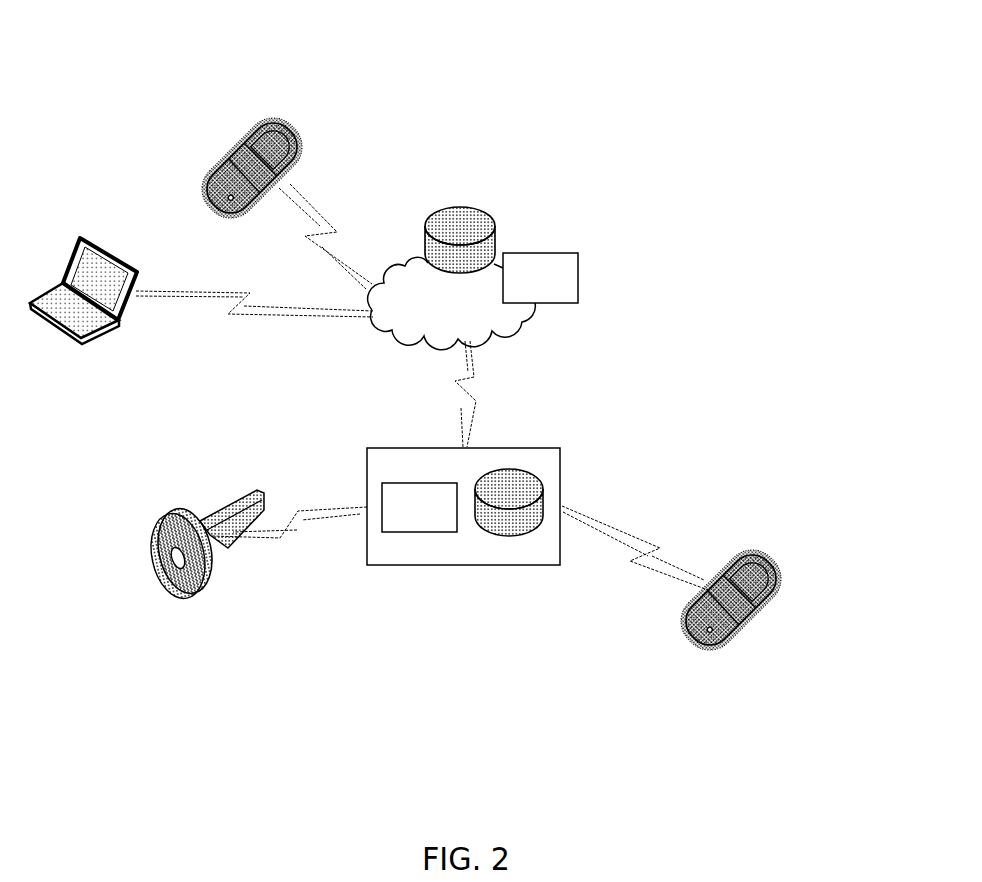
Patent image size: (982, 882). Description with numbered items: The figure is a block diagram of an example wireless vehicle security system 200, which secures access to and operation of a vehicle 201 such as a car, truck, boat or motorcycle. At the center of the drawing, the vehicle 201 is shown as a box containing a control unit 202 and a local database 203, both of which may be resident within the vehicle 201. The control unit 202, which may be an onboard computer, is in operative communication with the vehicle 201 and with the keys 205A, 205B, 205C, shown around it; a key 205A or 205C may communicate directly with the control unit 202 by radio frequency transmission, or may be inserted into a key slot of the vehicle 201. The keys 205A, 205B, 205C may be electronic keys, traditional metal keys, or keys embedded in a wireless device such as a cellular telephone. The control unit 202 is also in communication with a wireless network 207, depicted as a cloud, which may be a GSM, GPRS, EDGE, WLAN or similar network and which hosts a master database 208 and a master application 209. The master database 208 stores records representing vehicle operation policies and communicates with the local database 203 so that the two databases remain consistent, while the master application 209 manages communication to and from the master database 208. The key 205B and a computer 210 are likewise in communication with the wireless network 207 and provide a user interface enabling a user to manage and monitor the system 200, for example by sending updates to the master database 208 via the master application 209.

The wireless vehicle security system 200 is at (500, 25).
The vehicle 201 is at (560, 448).
The control unit 202 is at (418, 532).
The local database 203 is at (517, 537).
The key 205A is at (753, 550).
The key 205B is at (292, 188).
The key 205C is at (175, 508).
The wireless network 207 is at (476, 313).
The master database 208 is at (493, 227).
The master application 209 is at (578, 277).
The computer 210 is at (63, 247).